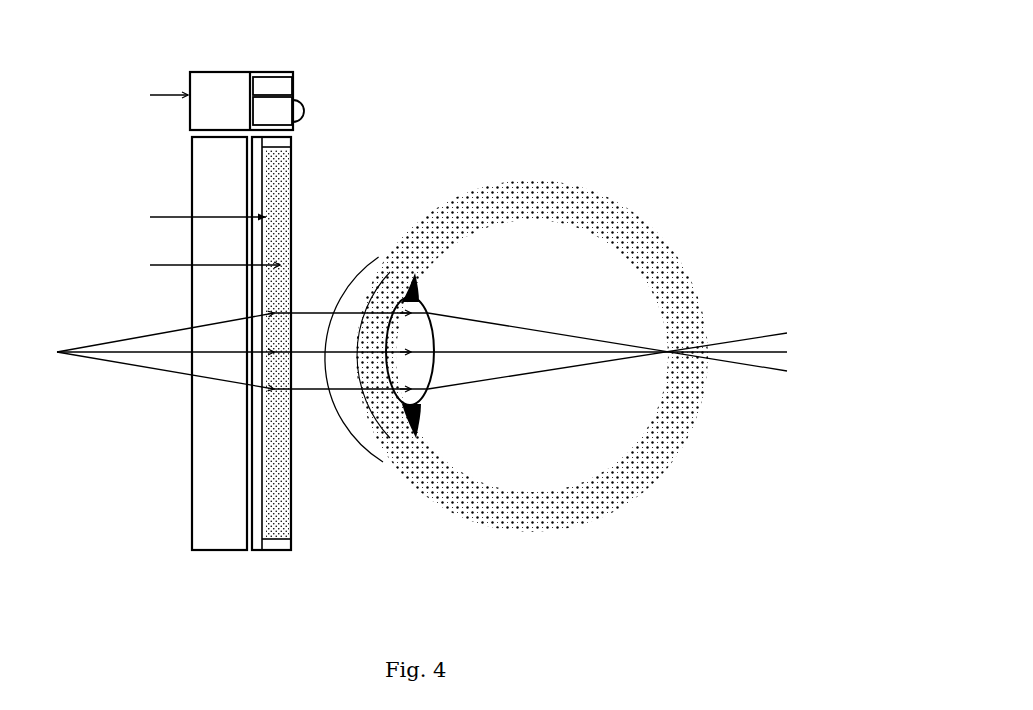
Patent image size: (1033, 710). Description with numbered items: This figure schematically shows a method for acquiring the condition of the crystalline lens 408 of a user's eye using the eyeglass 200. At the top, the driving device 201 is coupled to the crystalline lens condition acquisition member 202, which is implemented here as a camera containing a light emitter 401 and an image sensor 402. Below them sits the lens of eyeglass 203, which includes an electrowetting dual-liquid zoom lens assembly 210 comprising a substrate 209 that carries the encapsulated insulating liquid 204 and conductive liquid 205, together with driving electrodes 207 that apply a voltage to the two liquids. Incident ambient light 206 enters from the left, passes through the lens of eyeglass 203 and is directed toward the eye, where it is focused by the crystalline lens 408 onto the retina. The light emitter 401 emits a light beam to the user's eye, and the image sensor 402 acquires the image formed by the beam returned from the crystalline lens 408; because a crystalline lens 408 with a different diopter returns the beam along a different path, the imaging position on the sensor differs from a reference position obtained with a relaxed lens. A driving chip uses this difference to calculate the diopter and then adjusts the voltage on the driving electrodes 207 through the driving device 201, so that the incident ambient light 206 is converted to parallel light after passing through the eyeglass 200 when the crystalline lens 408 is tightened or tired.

The eyeglass 200 is at (308, 51).
The driving device 201 is at (221, 101).
The crystalline lens condition acquisition member 202 is at (298, 94).
The lens of eyeglass 203 is at (259, 360).
The insulating liquid 204 is at (185, 219).
The conductive liquid 205 is at (194, 271).
The incident ambient light 206 is at (409, 351).
The driving electrodes 207 is at (280, 552).
The substrate 209 is at (219, 343).
The electrowetting dual-liquid zoom lens assembly 210 is at (298, 346).
The light emitter 401 is at (272, 111).
The image sensor 402 is at (272, 86).
The crystalline lens 408 is at (299, 116).